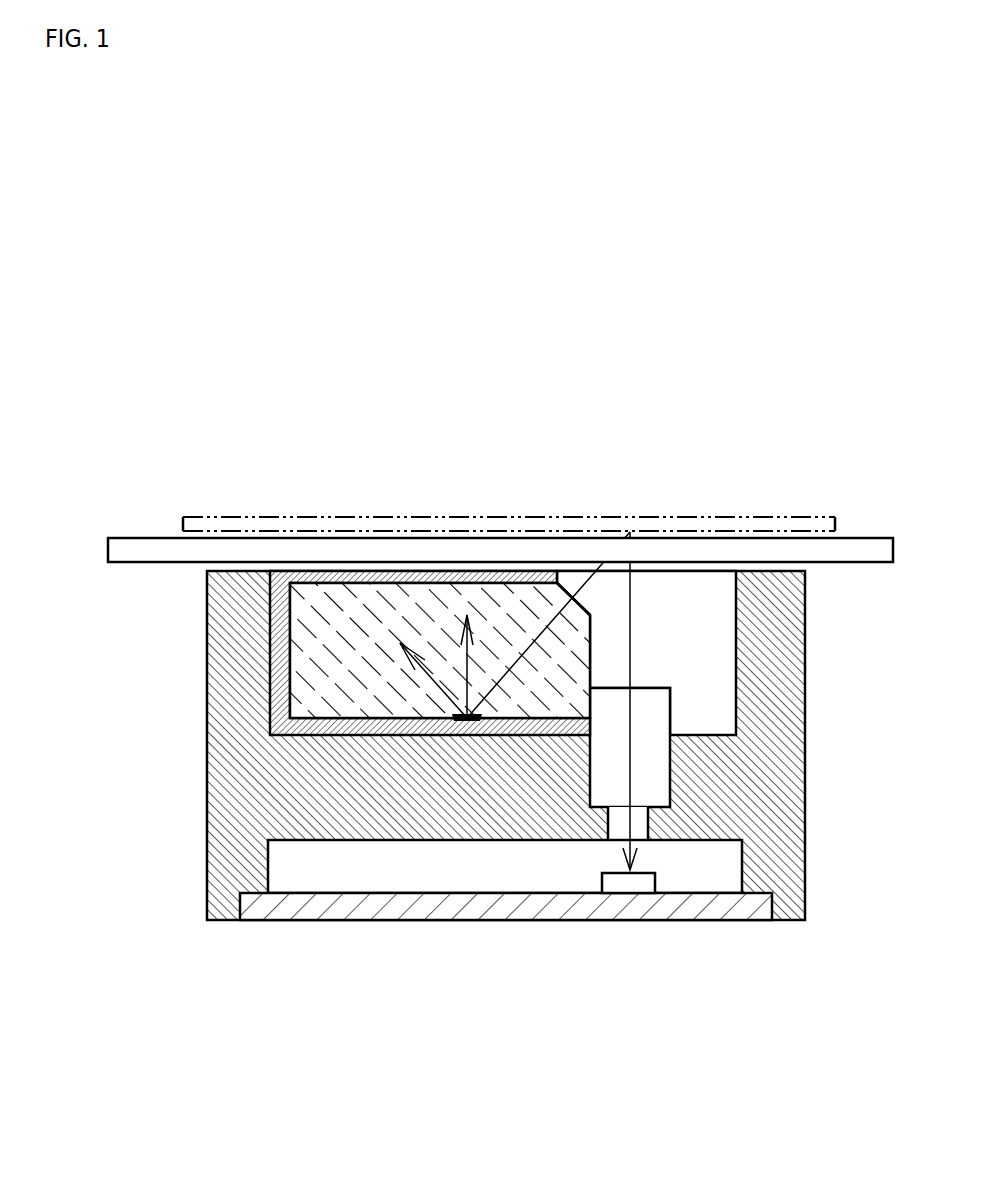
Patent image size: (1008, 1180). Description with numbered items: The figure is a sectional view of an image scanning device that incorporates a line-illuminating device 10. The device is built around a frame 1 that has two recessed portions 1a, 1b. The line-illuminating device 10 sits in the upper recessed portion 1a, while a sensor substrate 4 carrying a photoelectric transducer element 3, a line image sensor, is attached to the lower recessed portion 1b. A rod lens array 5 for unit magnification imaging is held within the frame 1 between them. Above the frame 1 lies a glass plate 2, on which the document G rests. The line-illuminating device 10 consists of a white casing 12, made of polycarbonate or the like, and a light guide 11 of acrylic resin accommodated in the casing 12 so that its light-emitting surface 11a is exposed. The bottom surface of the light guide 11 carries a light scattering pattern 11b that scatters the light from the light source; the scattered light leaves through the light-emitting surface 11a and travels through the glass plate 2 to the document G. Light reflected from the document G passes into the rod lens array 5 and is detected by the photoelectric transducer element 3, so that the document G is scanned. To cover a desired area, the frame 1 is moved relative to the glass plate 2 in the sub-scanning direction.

The frame 1 is at (240, 775).
The recessed portion 1a is at (728, 650).
The recessed portion 1b is at (268, 863).
The glass plate 2 is at (345, 545).
The photoelectric transducer element 3 is at (630, 888).
The sensor substrate 4 is at (714, 908).
The rod lens array 5 is at (648, 775).
The line-illuminating device 10 is at (326, 653).
The light guide 11 is at (330, 668).
The light-emitting surface 11a is at (567, 593).
The light scattering pattern 11b is at (467, 722).
The casing 12 is at (270, 627).
The document G is at (683, 530).